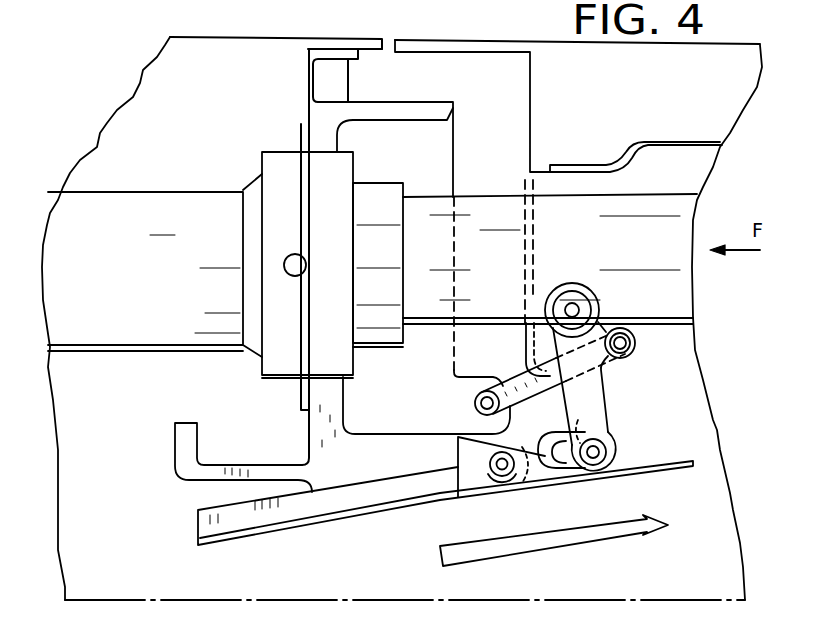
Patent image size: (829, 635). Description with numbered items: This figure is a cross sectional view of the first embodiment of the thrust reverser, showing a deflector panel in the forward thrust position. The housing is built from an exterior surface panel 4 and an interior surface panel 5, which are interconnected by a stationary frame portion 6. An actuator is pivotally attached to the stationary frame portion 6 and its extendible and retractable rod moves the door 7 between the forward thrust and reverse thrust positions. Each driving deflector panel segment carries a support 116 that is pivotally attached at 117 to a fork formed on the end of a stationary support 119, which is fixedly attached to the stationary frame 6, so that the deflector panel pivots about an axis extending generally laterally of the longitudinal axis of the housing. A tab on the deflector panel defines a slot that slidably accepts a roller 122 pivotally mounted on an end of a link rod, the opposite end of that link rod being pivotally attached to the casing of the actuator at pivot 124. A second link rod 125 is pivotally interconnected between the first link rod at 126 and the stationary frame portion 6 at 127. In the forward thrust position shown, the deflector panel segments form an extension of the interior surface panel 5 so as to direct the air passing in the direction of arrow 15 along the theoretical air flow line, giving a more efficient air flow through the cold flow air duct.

The exterior surface panel 4 is at (307, 48).
The interior surface panel 5 is at (312, 507).
The stationary frame portion 6 is at (323, 424).
The door 7 is at (552, 68).
The arrow (theoretical air flow line) 15 is at (553, 542).
The support 116 is at (538, 480).
The pivot attachment 117 is at (502, 471).
The stationary support 119 is at (470, 460).
The roller 122 is at (600, 458).
The pivot 124 is at (575, 309).
The second link rod 125 is at (604, 393).
The pivot connection 126 is at (626, 345).
The pivot connection 127 is at (480, 409).